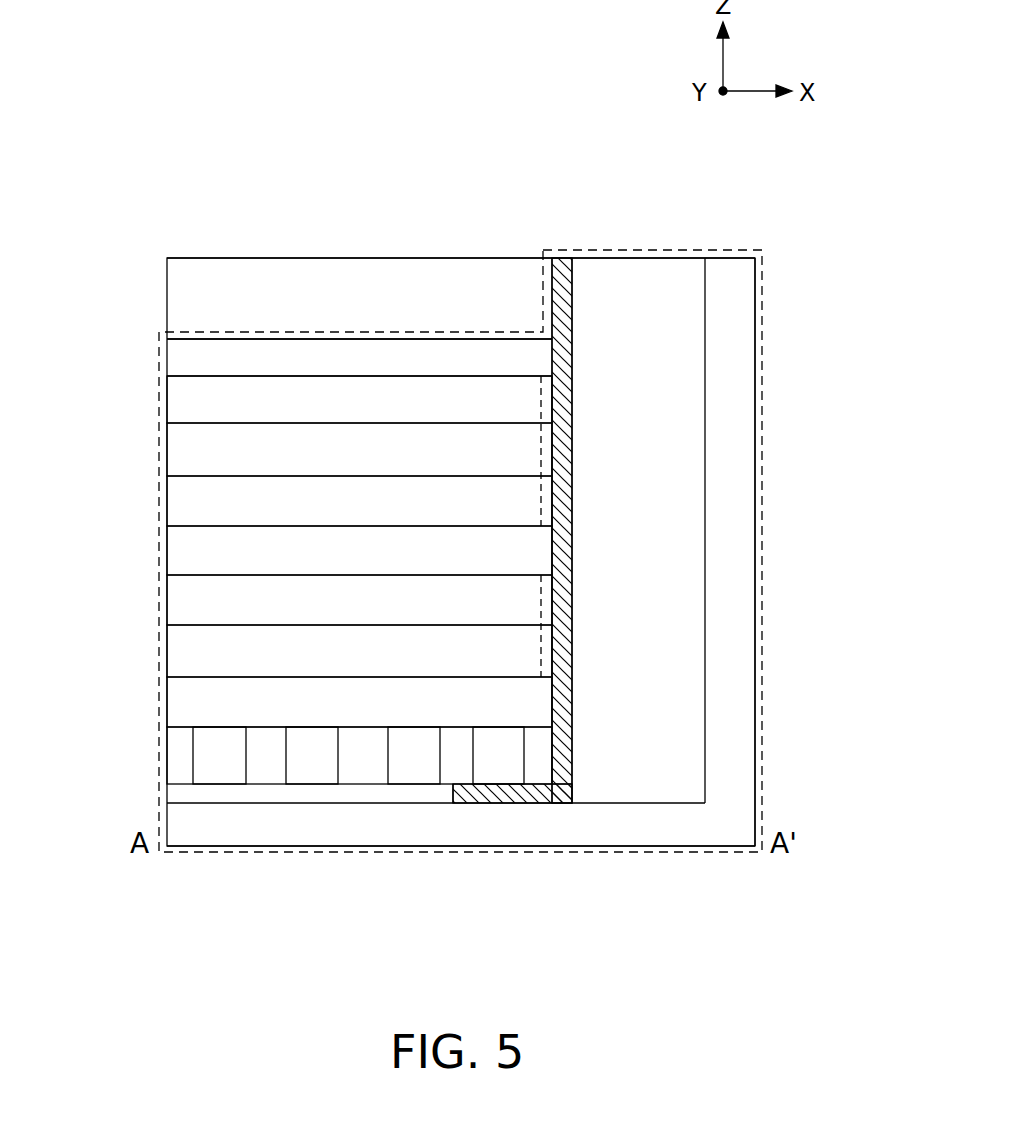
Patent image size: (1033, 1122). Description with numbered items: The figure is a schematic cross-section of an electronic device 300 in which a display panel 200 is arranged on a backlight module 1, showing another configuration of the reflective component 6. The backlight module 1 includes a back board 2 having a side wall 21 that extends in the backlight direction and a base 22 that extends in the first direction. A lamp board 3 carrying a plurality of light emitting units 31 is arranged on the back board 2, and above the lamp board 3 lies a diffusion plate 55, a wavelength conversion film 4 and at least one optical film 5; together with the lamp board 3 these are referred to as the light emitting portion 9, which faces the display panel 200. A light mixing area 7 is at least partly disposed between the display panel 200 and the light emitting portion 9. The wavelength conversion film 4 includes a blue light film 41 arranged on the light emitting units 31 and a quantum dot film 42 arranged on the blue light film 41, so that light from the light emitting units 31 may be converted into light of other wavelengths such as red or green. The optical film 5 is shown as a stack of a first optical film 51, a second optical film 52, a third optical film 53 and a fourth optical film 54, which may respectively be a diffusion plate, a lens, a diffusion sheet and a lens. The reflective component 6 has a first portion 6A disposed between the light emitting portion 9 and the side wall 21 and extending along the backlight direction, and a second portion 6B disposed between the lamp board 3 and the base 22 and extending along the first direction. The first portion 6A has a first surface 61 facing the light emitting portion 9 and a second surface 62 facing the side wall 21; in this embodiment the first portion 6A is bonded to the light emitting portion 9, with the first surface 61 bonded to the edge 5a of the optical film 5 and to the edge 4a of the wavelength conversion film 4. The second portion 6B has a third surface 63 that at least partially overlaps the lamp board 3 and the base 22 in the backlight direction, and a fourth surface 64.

The electronic device 300 is at (92, 234).
The display panel 200 is at (244, 272).
The backlight module 1 is at (762, 340).
The back board 2 is at (522, 582).
The side wall 21 is at (737, 465).
The base 22 is at (320, 815).
The lamp board 3 is at (180, 760).
The light emitting units 31 is at (312, 769).
The wavelength conversion film 4 is at (97, 588).
The blue light film 41 is at (180, 652).
The quantum dot film 42 is at (180, 603).
The edge of the wavelength conversion film 4a is at (560, 645).
The optical film 5 is at (97, 388).
The first optical film 51 is at (180, 553).
The second optical film 52 is at (180, 503).
The third optical film 53 is at (180, 453).
The fourth optical film 54 is at (180, 403).
The diffusion plate 55 is at (180, 713).
The edge of the optical film 5a is at (560, 450).
The reflective component 6 is at (666, 582).
The first portion 6A is at (572, 413).
The second portion 6B is at (545, 803).
The first surface 61 is at (552, 297).
The second surface 62 is at (572, 300).
The third surface 63 is at (512, 783).
The fourth surface 64 is at (480, 805).
The light mixing area 7 is at (422, 352).
The light emitting portion 9 is at (55, 465).